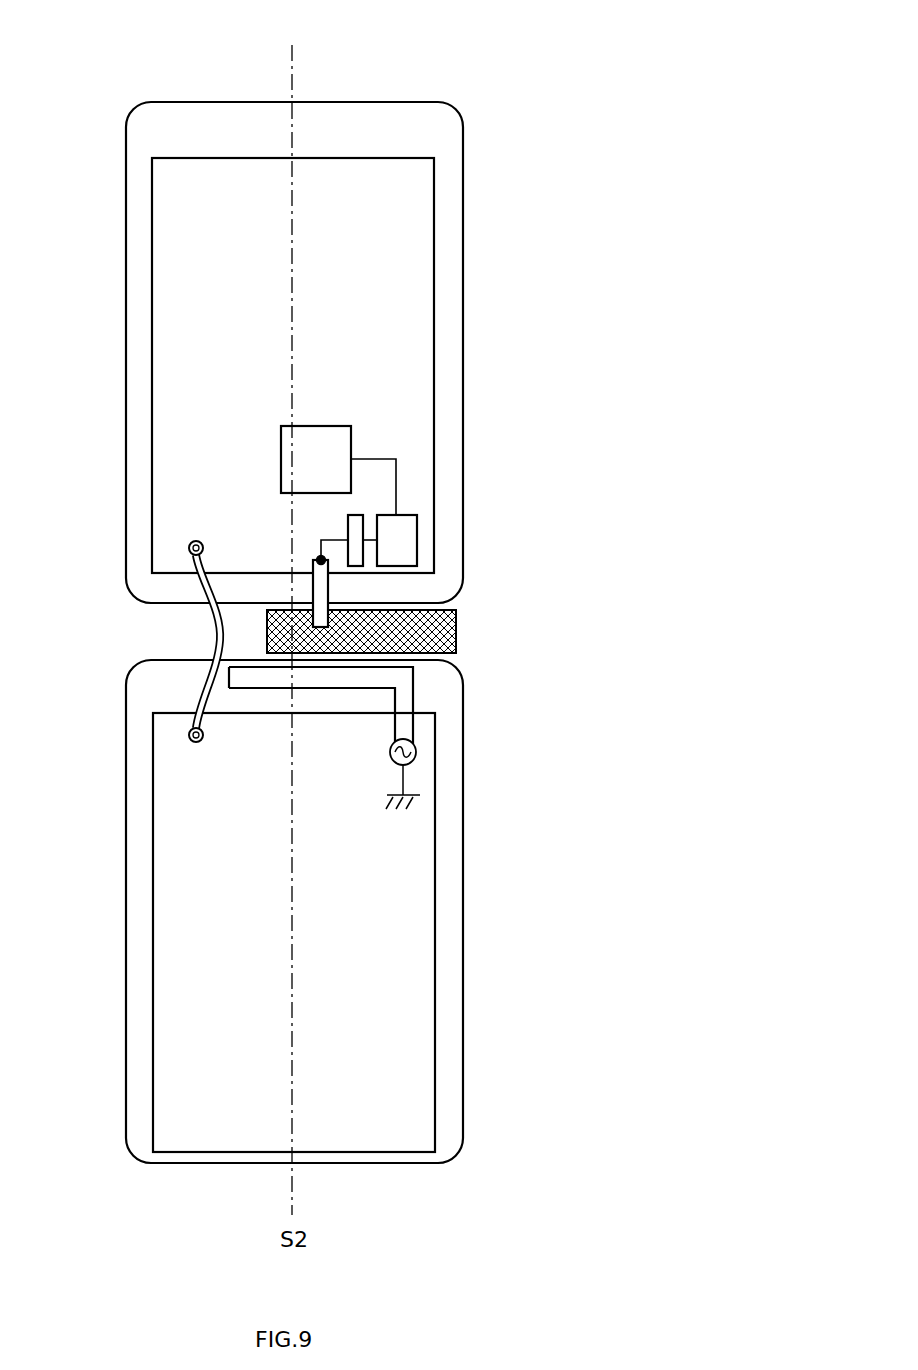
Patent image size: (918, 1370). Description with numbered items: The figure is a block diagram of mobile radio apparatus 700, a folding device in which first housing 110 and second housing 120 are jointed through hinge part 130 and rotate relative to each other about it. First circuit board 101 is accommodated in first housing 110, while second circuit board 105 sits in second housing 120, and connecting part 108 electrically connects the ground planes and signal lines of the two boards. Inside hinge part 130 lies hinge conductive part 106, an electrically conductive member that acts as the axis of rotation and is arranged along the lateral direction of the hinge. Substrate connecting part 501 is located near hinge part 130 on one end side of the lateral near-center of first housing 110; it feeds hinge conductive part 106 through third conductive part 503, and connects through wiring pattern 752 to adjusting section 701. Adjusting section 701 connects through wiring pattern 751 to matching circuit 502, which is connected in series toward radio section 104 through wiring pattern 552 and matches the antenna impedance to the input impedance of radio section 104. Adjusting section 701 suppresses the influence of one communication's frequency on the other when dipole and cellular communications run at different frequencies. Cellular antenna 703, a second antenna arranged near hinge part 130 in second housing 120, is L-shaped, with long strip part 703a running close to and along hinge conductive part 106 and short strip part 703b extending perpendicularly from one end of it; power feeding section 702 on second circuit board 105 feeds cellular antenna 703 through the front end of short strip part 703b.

The mobile radio apparatus 700 is at (518, 68).
The first housing 110 is at (332, 102).
The second housing 120 is at (463, 1083).
The first circuit board 101 is at (182, 255).
The second circuit board 105 is at (182, 1062).
The radio section 104 is at (315, 433).
The hinge conductive part 106 is at (445, 622).
The hinge part 130 is at (463, 637).
The connecting part 108 is at (213, 652).
The substrate connecting part 501 is at (320, 557).
The third conductive part 503 is at (320, 583).
The matching circuit 502 is at (408, 550).
The wiring pattern 552 is at (363, 459).
The adjusting section 701 is at (357, 513).
The wiring pattern 751 is at (368, 537).
The wiring pattern 752 is at (337, 540).
The cellular antenna 703 is at (407, 693).
The long strip part 703a is at (333, 673).
The short strip part 703b is at (403, 730).
The power feeding section 702 is at (415, 765).